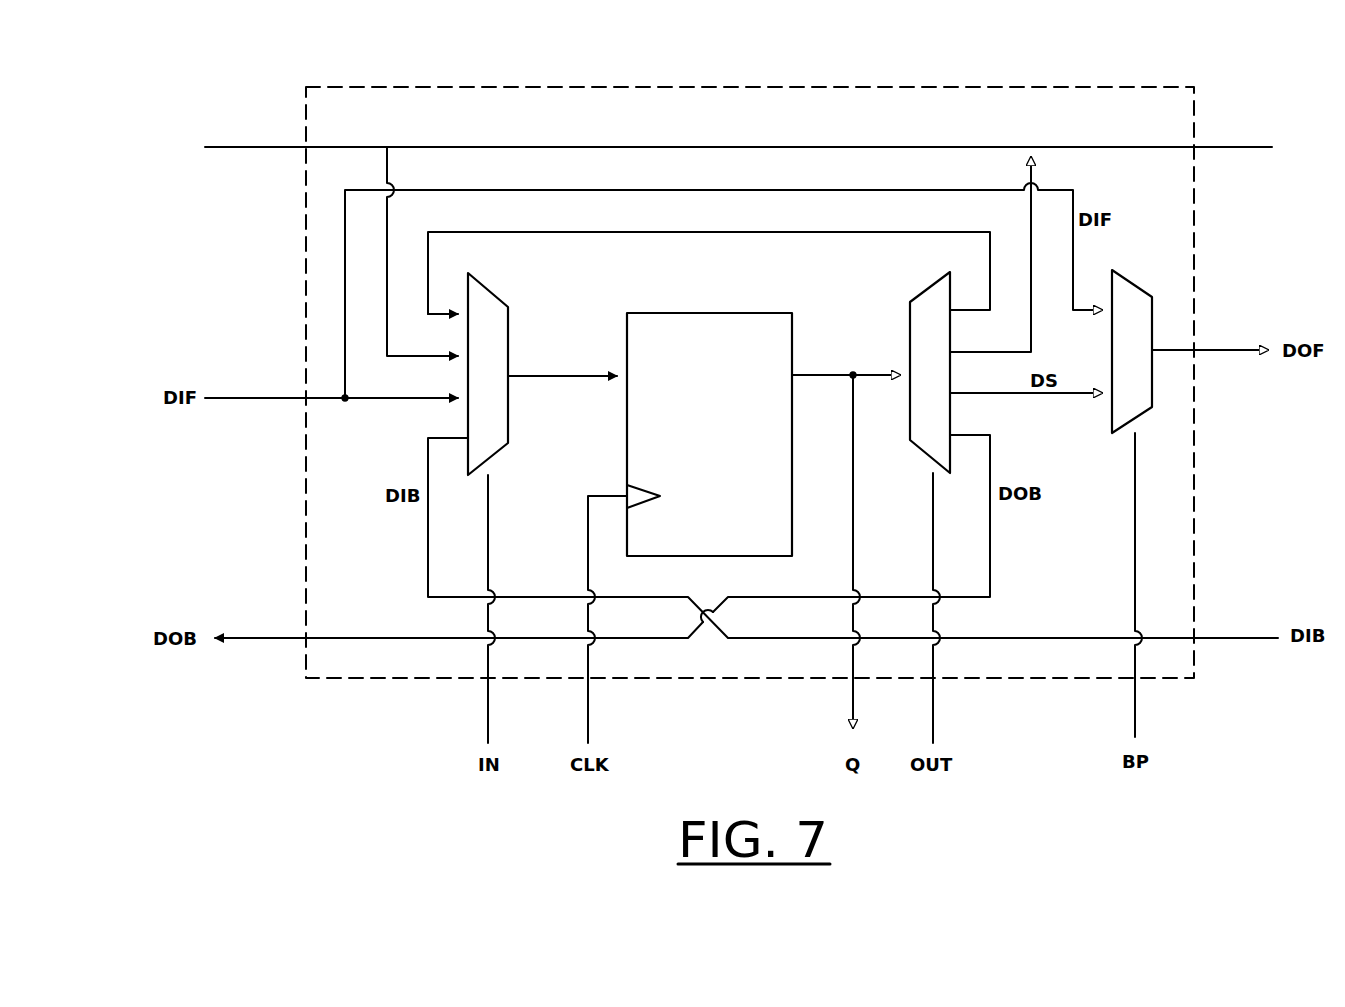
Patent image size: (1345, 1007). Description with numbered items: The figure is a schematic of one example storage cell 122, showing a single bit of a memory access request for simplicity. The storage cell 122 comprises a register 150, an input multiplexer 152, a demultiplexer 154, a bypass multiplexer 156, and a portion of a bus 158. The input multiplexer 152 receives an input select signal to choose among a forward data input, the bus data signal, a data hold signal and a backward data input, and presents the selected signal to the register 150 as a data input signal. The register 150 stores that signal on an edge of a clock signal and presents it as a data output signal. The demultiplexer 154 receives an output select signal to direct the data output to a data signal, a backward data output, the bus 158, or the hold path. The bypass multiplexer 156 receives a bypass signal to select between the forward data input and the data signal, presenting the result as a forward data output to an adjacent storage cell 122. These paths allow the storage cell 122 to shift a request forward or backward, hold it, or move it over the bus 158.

The storage cell 122 is at (405, 86).
The register 150 is at (751, 312).
The input multiplexer 152 is at (487, 290).
The demultiplexer 154 is at (929, 284).
The bypass multiplexer 156 is at (1133, 283).
The bus 158 is at (1250, 147).